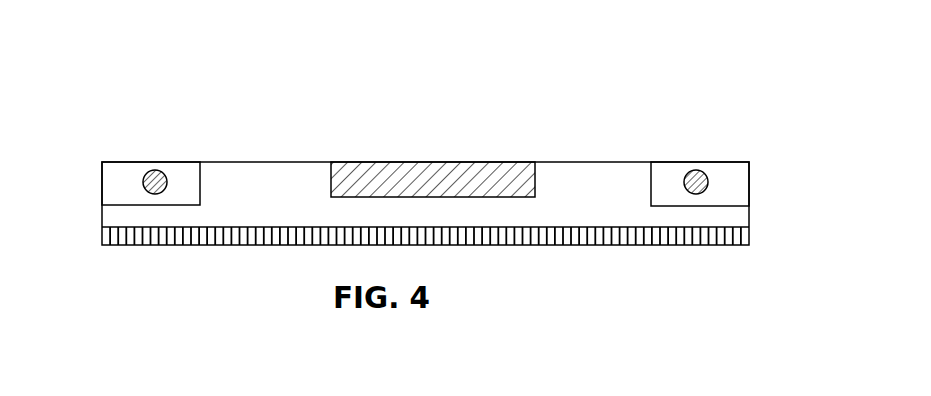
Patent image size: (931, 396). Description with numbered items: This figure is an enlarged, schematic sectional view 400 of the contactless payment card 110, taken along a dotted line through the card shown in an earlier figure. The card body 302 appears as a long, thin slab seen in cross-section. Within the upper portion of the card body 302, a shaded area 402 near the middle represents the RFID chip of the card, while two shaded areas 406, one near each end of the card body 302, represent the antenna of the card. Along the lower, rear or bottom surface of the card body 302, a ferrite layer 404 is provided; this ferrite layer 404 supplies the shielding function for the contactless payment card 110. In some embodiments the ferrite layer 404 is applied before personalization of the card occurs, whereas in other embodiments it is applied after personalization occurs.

The schematic sectional view 400 is at (112, 102).
The contactless payment card 110 is at (615, 158).
The card body 302 is at (749, 170).
The shaded area 402 is at (513, 162).
The ferrite layer 404 is at (749, 237).
The shaded areas 406 is at (167, 176).